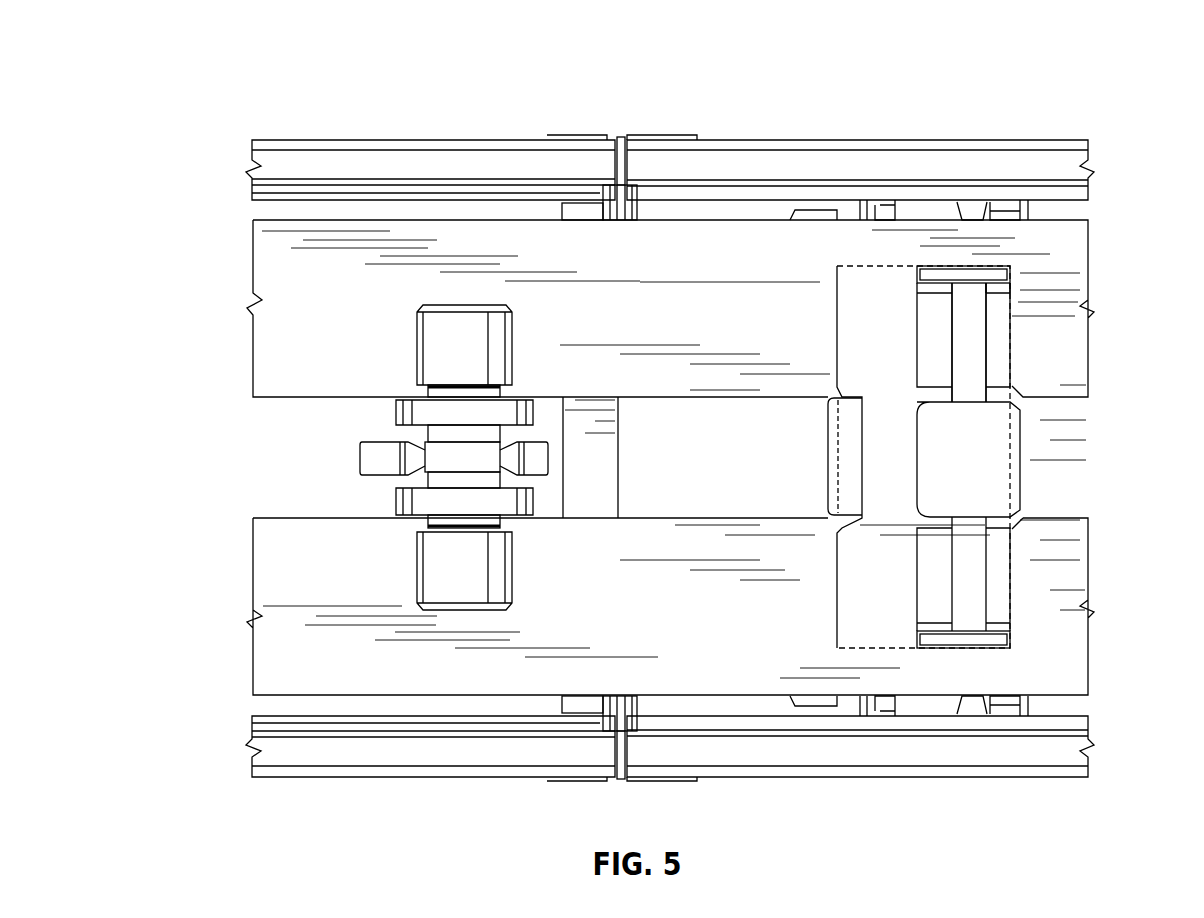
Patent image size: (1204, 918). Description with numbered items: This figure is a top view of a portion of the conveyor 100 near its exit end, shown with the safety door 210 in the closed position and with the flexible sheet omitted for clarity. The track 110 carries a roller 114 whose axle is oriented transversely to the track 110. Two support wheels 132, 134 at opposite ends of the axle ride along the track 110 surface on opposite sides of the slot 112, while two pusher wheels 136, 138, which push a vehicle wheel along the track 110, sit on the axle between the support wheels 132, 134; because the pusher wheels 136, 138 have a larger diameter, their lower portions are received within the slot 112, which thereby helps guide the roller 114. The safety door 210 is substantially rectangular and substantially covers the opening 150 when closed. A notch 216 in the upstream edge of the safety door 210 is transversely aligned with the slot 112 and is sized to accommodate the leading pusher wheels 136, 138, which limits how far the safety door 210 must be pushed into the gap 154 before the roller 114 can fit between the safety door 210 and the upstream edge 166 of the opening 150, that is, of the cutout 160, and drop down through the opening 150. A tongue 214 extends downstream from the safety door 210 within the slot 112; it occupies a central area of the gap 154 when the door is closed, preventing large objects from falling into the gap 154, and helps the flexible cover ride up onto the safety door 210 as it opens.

The conveyor 100 is at (383, 92).
The track 110 is at (253, 345).
The slot 112 is at (277, 468).
The roller 114 is at (441, 457).
The support wheel 132 is at (470, 322).
The support wheel 134 is at (440, 583).
The pusher wheel 136 is at (522, 408).
The pusher wheel 138 is at (517, 503).
The opening 150 is at (852, 282).
The gap 154 is at (990, 282).
The cutout 160 is at (938, 555).
The upstream edge 166 is at (842, 340).
The safety door 210 is at (890, 355).
The tongue 214 is at (1003, 452).
The notch 216 is at (827, 456).